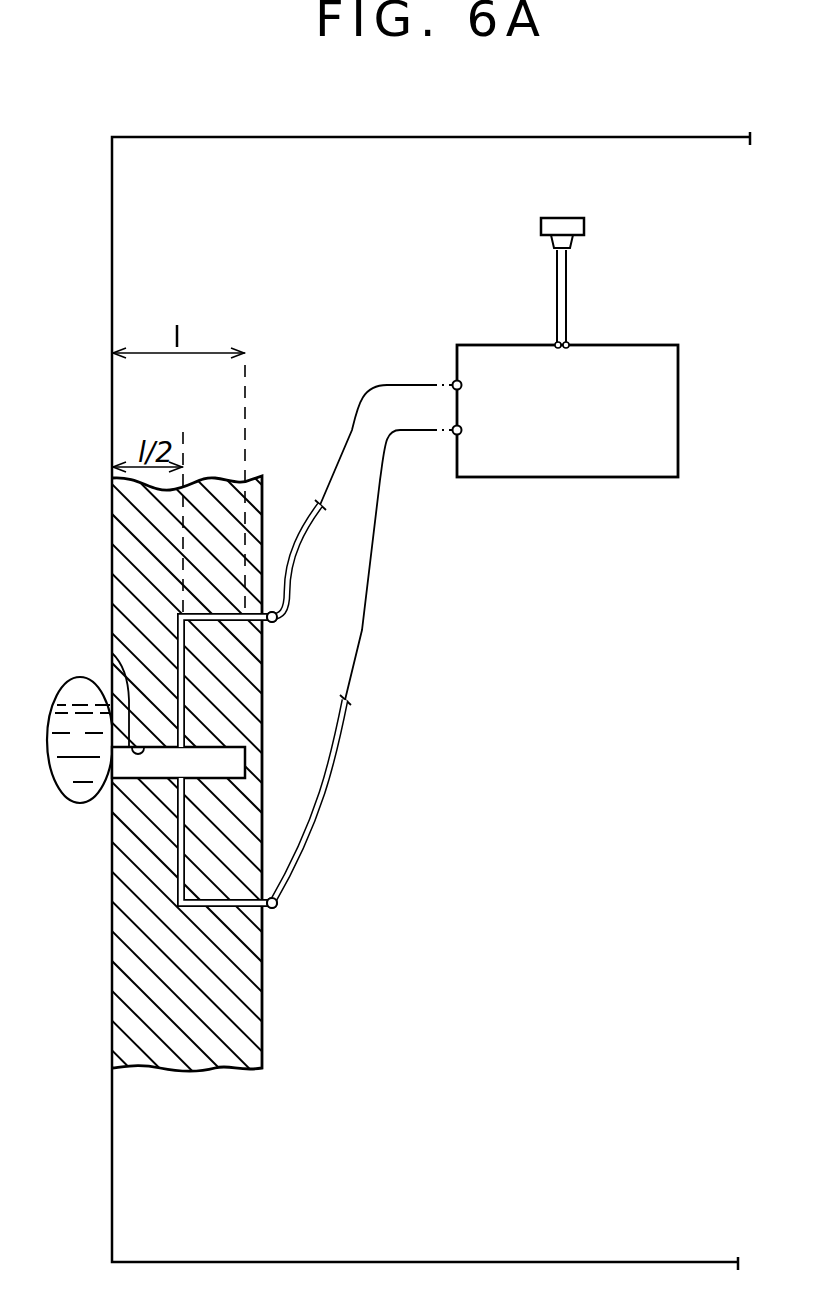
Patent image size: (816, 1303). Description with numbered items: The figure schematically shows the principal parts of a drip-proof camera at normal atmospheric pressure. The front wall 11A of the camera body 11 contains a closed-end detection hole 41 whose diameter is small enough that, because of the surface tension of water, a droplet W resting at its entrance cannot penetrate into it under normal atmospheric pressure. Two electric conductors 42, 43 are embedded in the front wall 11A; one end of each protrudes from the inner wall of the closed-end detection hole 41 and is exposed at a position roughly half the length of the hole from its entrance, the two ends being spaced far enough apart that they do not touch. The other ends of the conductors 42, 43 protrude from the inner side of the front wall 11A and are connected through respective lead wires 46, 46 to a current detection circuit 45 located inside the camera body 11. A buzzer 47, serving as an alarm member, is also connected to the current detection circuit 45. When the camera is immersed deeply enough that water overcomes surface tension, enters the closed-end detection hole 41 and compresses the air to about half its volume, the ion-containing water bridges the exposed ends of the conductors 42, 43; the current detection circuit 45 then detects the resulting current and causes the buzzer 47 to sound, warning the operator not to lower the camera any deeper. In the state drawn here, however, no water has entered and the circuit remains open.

The camera body 11 is at (358, 136).
The front wall 11A is at (140, 998).
The closed-end detection hole 41 is at (111, 651).
The droplet W is at (57, 705).
The electric conductor 42 is at (183, 675).
The electric conductor 43 is at (183, 818).
The current detection circuit 45 is at (657, 343).
The lead wires 46 is at (304, 535).
The buzzer 47 is at (585, 227).